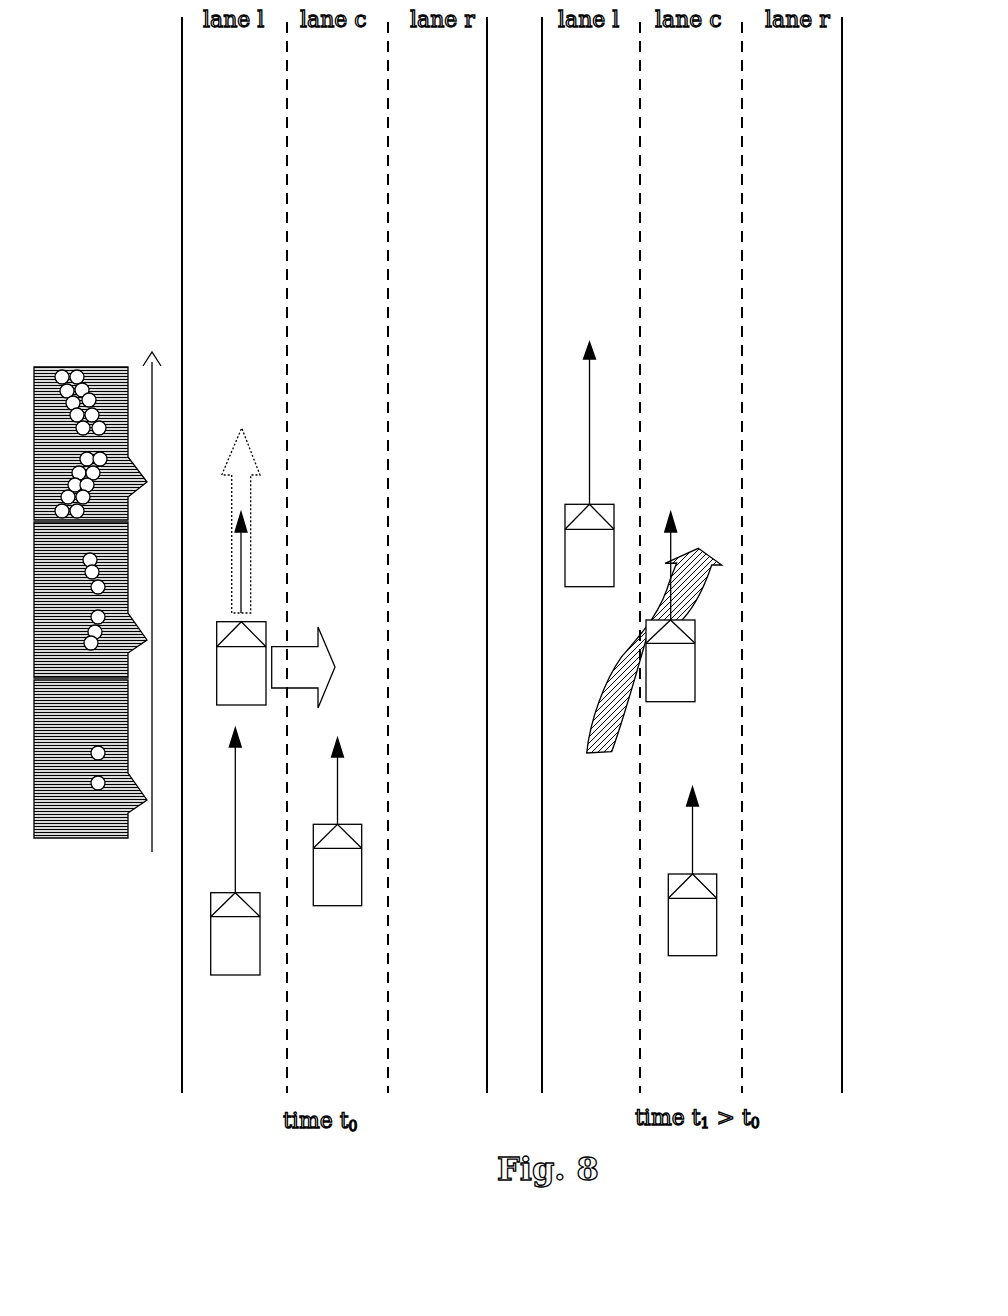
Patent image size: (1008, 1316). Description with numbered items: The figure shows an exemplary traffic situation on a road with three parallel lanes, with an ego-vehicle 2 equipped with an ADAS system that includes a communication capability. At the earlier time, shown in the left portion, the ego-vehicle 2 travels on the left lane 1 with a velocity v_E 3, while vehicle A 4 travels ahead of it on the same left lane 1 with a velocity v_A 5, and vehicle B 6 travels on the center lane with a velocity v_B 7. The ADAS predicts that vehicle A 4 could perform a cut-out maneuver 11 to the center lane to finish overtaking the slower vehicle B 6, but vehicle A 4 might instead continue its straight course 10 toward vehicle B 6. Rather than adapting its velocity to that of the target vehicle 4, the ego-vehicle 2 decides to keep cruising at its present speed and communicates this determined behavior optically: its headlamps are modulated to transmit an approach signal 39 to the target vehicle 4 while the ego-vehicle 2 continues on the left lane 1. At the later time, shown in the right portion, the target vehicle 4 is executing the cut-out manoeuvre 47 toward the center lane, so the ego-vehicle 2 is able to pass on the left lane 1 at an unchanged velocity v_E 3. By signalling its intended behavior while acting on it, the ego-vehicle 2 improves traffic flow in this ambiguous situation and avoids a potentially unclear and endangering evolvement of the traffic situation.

The left lane 1 is at (473, 843).
The ego-vehicle 2 is at (256, 968).
The velocity v_E of the ego-vehicle 3 is at (237, 812).
The vehicle A (target vehicle) 4 is at (227, 705).
The velocity v_A of vehicle A 5 is at (250, 563).
The vehicle B 6 is at (357, 858).
The velocity v_B of vehicle B 7 is at (338, 762).
The straight course 10 is at (251, 468).
The cut-out maneuver 11 is at (335, 660).
The approach signal 39 is at (108, 367).
The cut-out manoeuvre 47 is at (707, 590).